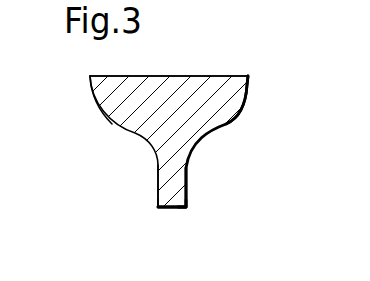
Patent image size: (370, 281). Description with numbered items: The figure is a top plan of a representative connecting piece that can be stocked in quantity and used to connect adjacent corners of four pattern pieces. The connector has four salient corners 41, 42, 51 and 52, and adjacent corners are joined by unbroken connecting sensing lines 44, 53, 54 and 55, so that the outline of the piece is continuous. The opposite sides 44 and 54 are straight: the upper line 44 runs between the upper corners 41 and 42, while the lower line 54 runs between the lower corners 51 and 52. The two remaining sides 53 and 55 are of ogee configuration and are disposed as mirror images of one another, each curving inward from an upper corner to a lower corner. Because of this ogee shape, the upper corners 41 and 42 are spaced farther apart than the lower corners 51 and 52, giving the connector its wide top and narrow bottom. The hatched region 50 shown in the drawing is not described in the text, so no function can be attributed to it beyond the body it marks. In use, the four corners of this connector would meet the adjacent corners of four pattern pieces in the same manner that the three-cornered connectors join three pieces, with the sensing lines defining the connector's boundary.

The salient corner 41 is at (290, 40).
The salient corner 42 is at (90, 78).
The connecting sensing line 44 is at (218, 33).
The flared body 50 is at (188, 105).
The salient corner 51 is at (187, 206).
The salient corner 52 is at (161, 208).
The connecting sensing line 53 is at (187, 174).
The connecting sensing line 54 is at (178, 209).
The connecting sensing line 55 is at (157, 163).